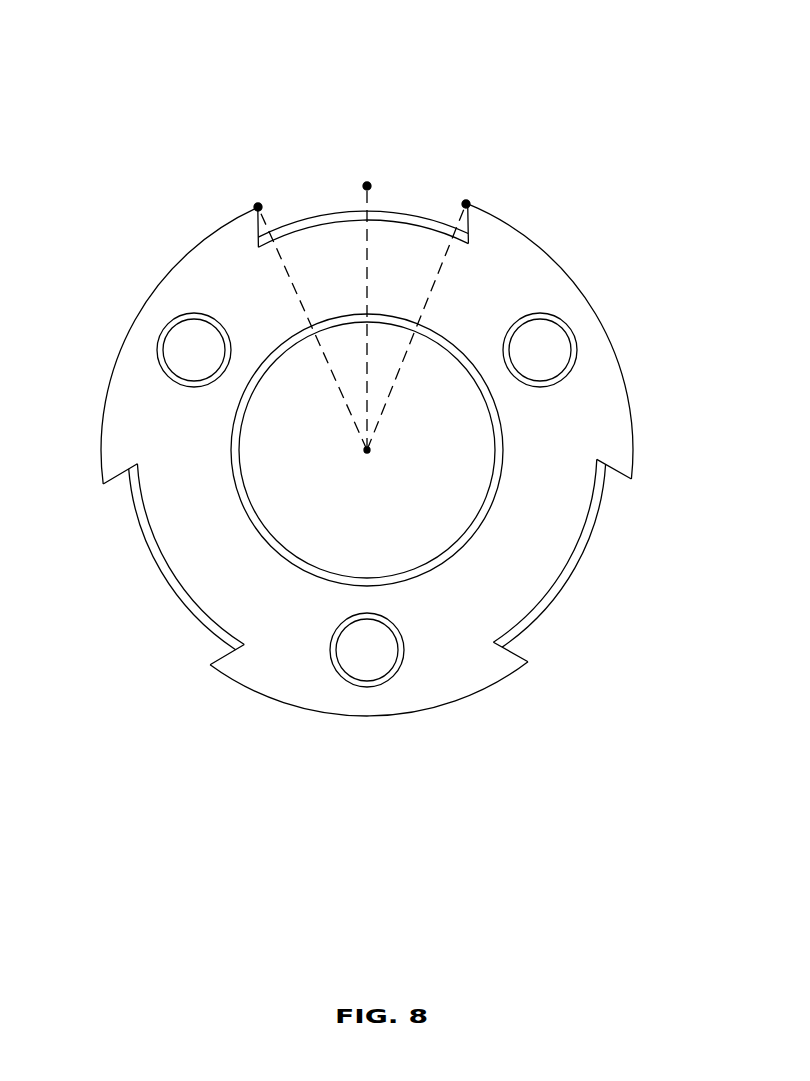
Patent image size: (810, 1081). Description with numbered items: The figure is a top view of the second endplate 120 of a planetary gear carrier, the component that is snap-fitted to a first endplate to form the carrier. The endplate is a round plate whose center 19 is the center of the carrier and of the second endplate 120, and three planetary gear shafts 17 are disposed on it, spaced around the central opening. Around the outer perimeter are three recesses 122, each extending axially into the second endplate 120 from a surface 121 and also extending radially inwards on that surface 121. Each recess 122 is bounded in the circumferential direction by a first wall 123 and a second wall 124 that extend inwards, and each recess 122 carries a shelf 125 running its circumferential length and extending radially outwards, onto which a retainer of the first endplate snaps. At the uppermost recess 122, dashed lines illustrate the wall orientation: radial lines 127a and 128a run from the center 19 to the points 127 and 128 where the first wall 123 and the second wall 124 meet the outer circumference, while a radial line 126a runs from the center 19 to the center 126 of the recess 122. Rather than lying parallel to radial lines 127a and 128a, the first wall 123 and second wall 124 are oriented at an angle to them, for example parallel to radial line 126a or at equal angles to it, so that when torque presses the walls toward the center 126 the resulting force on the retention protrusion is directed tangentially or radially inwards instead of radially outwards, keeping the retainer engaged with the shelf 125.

The second endplate 120 is at (643, 93).
The surface 121 is at (540, 598).
The recess 122 is at (331, 212).
The first wall 123 is at (258, 231).
The second wall 124 is at (493, 213).
The shelf 125 is at (148, 552).
The center of recess 126 is at (371, 186).
The radial line 126a is at (370, 262).
The point 127 is at (260, 207).
The radial line 127a is at (302, 305).
The point 128 is at (466, 200).
The radial line 128a is at (428, 298).
The planetary gear shafts 17 is at (188, 358).
The center of carrier 19 is at (365, 464).